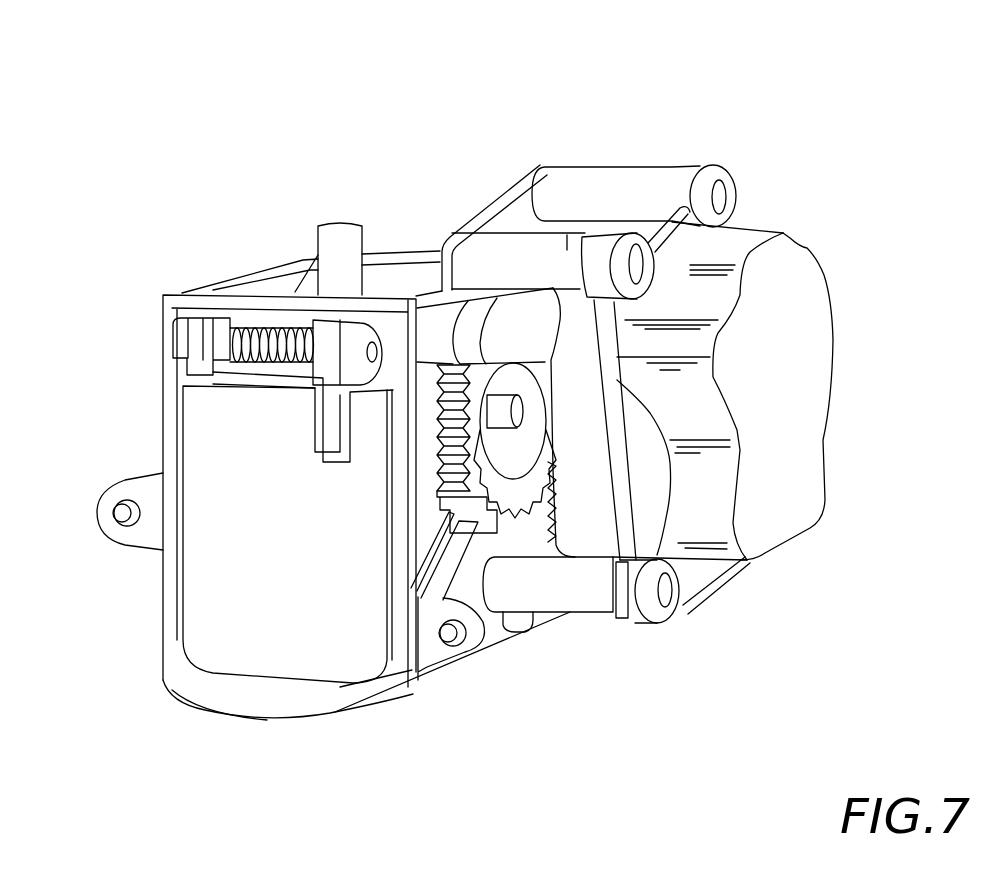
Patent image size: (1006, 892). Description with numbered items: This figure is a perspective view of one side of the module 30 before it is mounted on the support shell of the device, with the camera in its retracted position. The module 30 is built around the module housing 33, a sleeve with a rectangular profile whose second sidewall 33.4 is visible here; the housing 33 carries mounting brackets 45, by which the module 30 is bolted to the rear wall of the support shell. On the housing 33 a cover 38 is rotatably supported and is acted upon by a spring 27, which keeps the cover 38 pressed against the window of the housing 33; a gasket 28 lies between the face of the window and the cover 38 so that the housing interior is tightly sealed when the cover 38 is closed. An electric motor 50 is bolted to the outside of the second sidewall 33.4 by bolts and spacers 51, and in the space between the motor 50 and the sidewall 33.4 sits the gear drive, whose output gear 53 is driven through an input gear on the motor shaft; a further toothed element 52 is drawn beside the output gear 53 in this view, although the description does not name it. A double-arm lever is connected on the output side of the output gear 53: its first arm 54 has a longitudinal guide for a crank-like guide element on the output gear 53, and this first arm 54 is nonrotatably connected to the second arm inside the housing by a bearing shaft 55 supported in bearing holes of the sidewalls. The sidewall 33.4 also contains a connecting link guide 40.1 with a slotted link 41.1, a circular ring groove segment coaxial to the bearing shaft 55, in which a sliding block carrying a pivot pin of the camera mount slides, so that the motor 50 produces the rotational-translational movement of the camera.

The spring 27 is at (260, 328).
The gasket 28 is at (218, 690).
The module 30 is at (812, 166).
The module housing 33 is at (273, 228).
The second sidewall 33.4 is at (517, 170).
The cover 38 is at (243, 475).
The connecting link guide 40.1 is at (433, 622).
The slotted link 41.1 is at (410, 565).
The mounting brackets 45 is at (120, 533).
The electric motor 50 is at (780, 387).
The bolts and spacers 51 is at (620, 190).
The pinion gear 52 is at (543, 533).
The output gear 53 is at (510, 502).
The first arm 54 is at (507, 342).
The bearing shaft 55 is at (437, 332).